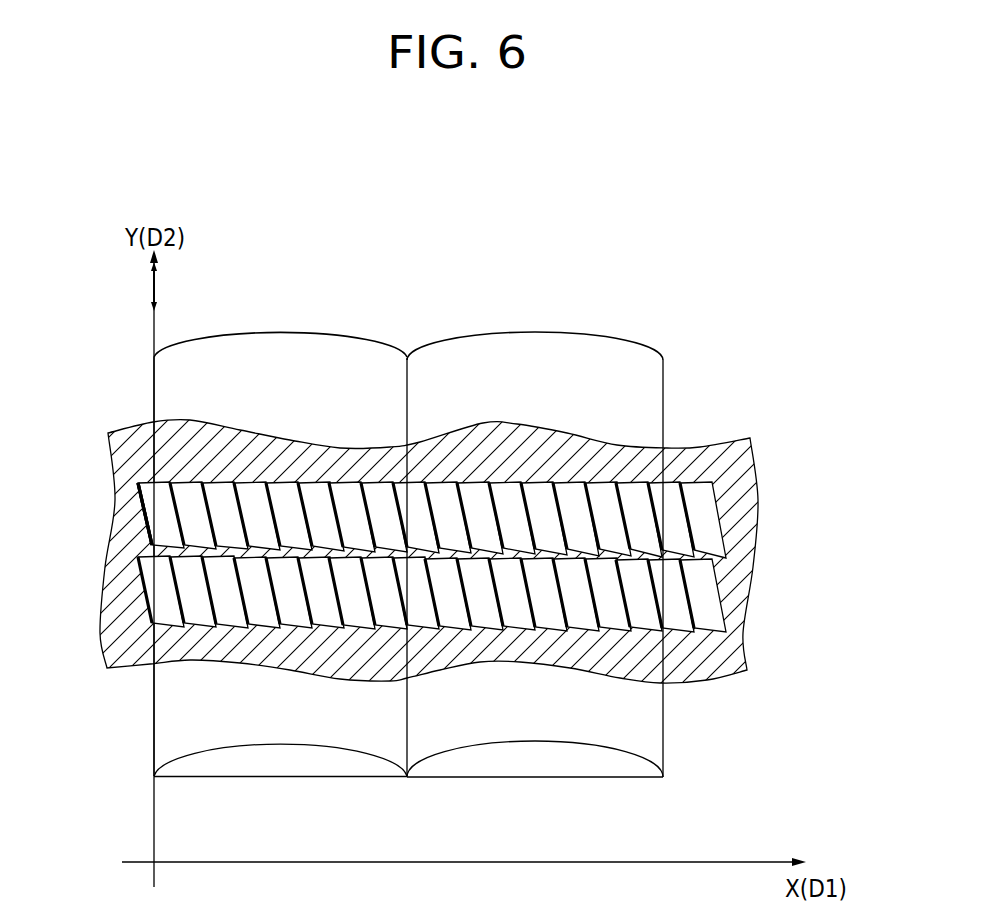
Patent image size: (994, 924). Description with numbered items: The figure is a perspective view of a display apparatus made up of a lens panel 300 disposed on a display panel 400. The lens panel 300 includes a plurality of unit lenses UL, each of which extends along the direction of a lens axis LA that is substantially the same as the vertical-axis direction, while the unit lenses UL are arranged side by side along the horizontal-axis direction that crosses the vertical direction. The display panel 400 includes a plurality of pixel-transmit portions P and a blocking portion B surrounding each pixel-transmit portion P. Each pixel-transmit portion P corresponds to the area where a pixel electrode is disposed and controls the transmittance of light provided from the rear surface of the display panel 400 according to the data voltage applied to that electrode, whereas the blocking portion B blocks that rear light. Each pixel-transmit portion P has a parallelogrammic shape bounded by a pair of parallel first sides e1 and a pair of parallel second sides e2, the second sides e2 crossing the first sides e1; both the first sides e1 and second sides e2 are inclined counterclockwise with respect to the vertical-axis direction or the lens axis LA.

The lens panel 300 is at (279, 329).
The display panel 400 is at (402, 527).
The unit lens UL is at (543, 331).
The pixel-transmit portion P is at (712, 525).
The blocking portion B is at (730, 582).
The first side e1 is at (141, 478).
The second side e2 is at (143, 498).
The lens axis LA is at (135, 289).